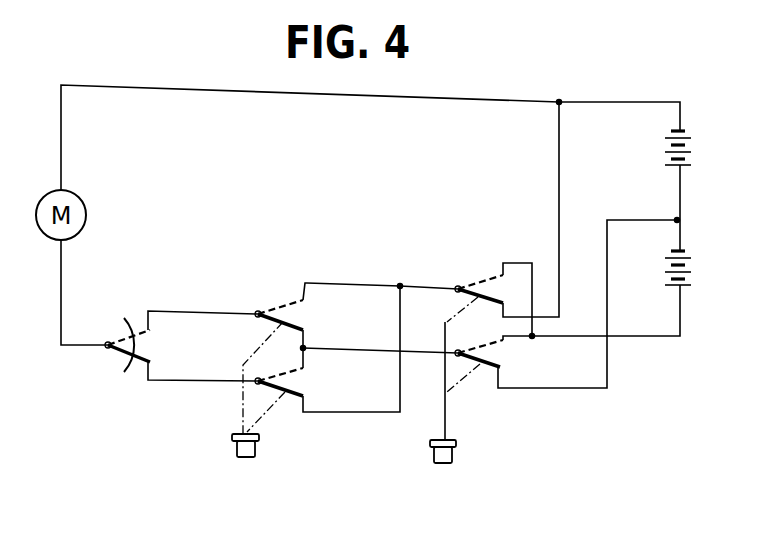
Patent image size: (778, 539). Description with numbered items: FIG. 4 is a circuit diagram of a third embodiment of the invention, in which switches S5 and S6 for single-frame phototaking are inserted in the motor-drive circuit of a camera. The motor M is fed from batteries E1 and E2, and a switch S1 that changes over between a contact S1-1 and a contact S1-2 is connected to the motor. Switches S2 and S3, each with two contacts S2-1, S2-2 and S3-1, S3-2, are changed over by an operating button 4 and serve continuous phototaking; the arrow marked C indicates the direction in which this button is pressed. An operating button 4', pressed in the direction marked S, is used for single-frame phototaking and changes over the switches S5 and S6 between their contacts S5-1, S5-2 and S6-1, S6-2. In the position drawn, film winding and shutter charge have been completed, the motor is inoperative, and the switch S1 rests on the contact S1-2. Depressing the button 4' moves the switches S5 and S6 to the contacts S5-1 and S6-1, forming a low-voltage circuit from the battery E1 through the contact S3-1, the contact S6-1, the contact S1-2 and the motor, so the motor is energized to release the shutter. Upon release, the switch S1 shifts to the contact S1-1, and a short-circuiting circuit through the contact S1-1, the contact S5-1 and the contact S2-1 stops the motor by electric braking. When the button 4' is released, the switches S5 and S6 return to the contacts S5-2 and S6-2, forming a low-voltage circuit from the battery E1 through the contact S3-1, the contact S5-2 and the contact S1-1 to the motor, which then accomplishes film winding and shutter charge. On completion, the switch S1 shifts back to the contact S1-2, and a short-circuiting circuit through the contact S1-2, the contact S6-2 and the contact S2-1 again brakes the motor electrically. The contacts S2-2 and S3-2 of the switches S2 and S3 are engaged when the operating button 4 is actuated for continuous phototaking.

The switch S1 is at (127, 368).
The contact S1-1 is at (155, 329).
The contact S1-2 is at (155, 367).
The switch S5 is at (270, 321).
The contact S5-1 is at (310, 304).
The contact S5-2 is at (312, 336).
The switch S6 is at (295, 398).
The contact S6-1 is at (312, 373).
The contact S6-2 is at (312, 402).
The switch S2 is at (466, 294).
The contact S2-1 is at (503, 311).
The contact S2-2 is at (505, 265).
The switch S3 is at (482, 368).
The contact S3-1 is at (506, 374).
The contact S3-2 is at (509, 345).
The battery E1 is at (693, 148).
The battery E2 is at (692, 268).
The operating button 4 is at (462, 453).
The operating button 4' is at (221, 444).
The actuation direction S is at (247, 462).
The actuation direction C is at (442, 469).